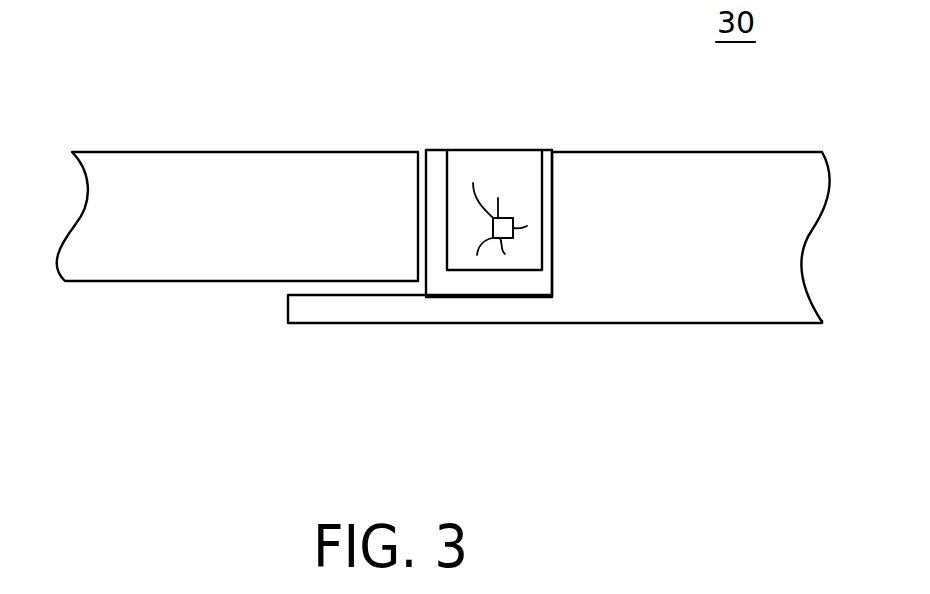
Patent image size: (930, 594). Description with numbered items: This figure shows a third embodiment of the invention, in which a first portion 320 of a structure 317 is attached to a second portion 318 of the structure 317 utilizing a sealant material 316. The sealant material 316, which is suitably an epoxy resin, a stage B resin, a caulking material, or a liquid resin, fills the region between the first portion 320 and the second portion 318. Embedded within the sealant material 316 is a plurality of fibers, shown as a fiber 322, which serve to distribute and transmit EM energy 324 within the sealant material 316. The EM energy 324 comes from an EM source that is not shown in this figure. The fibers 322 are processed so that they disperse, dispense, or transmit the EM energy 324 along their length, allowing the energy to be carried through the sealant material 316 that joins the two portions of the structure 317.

The sealant material 316 is at (491, 280).
The structure 317 is at (373, 389).
The second portion 318 is at (682, 282).
The first portion 320 is at (219, 261).
The fiber 322 is at (473, 183).
The EM energy 324 is at (508, 218).